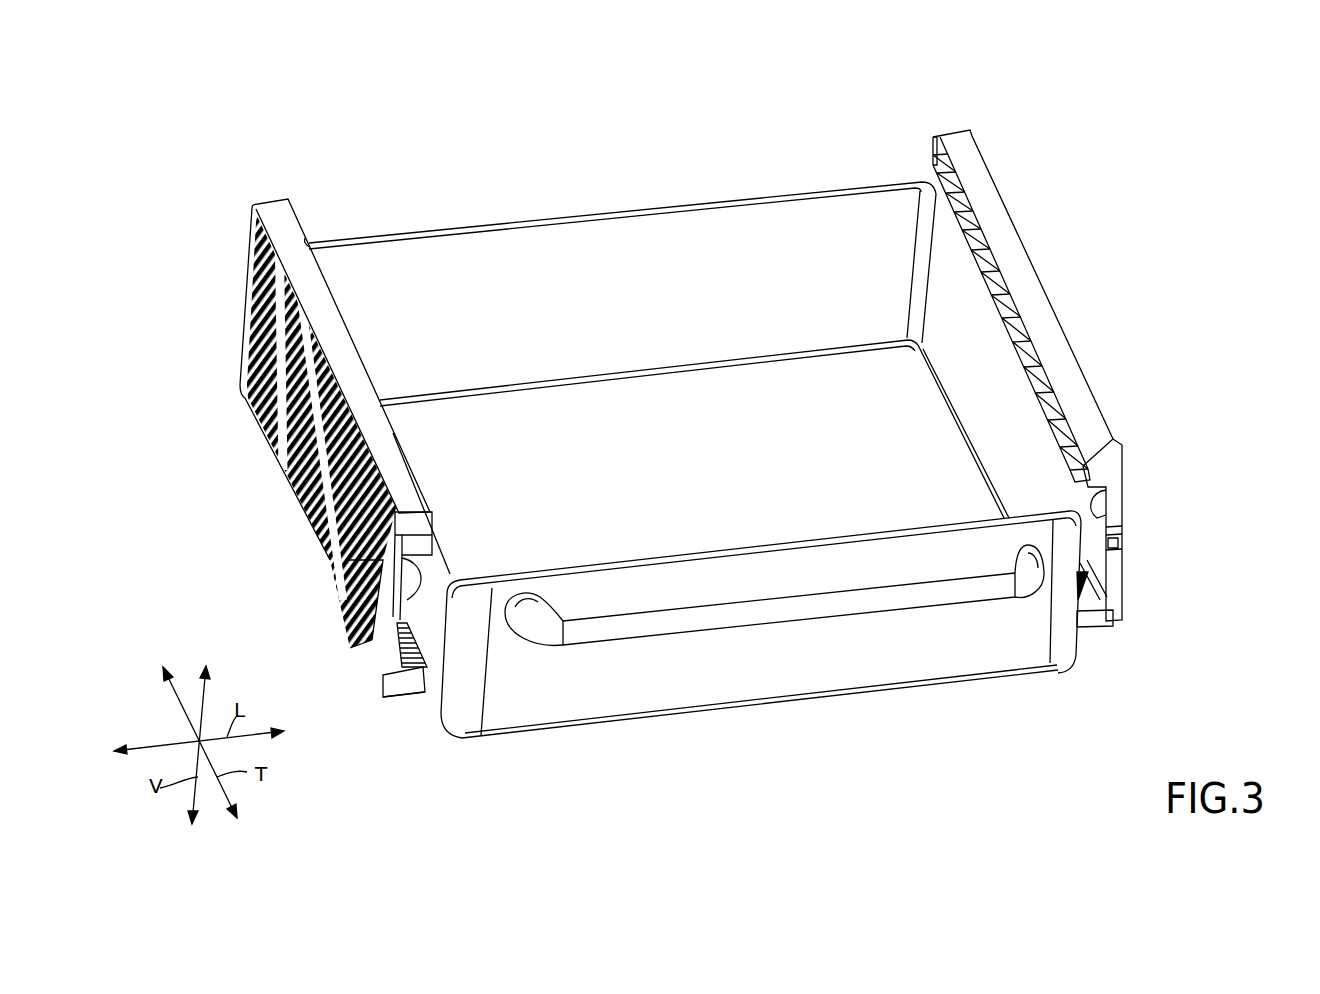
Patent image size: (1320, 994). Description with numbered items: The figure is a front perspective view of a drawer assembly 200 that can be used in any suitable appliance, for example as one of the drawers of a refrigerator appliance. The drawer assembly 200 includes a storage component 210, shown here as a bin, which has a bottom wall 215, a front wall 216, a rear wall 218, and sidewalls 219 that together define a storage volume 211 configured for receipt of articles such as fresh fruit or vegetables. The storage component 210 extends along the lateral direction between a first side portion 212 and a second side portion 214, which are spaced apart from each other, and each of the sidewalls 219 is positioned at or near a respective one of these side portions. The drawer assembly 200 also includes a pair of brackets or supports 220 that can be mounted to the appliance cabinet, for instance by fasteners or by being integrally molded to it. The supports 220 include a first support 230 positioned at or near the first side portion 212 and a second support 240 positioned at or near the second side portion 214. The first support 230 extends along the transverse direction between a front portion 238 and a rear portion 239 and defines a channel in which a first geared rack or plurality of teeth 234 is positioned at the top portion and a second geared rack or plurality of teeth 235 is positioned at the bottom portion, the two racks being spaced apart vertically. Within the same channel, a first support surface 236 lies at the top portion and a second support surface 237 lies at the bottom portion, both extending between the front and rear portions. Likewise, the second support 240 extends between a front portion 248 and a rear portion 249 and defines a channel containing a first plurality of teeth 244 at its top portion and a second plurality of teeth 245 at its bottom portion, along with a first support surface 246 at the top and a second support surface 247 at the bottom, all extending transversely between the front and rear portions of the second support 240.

The drawer assembly 200 is at (1072, 122).
The storage component 210 is at (460, 742).
The storage volume 211 is at (505, 302).
The first side portion 212 is at (313, 232).
The second side portion 214 is at (916, 162).
The bottom wall 215 is at (655, 513).
The front wall 216 is at (762, 685).
The rear wall 218 is at (635, 230).
The sidewalls 219 is at (1002, 383).
The supports 220 is at (240, 313).
The first support 230 is at (275, 440).
The first plurality of teeth 234 is at (397, 612).
The second plurality of teeth 235 is at (420, 672).
The first support surface 236 is at (400, 576).
The second support surface 237 is at (395, 672).
The front portion 238 is at (432, 497).
The rear portion 239 is at (281, 188).
The second support 240 is at (1087, 407).
The first plurality of teeth 244 is at (1112, 515).
The second plurality of teeth 245 is at (1088, 590).
The first support surface 246 is at (1115, 492).
The second support surface 247 is at (1103, 596).
The front portion 248 is at (1132, 452).
The rear portion 249 is at (975, 126).